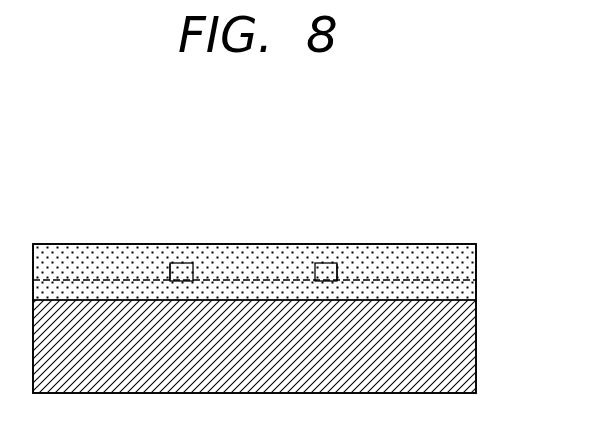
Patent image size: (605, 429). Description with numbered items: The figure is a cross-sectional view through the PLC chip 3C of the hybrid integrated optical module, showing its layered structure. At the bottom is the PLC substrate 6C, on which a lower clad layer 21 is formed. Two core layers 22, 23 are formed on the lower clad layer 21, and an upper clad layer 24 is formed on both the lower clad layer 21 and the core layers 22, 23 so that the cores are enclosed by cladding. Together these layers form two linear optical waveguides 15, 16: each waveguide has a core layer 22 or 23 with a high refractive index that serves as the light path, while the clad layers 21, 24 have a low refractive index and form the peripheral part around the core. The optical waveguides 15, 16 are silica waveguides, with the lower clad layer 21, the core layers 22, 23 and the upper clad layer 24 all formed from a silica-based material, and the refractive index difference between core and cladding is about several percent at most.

The PLC chip 3C is at (275, 214).
The PLC substrate 6C is at (470, 357).
The optical waveguide 15 is at (175, 260).
The optical waveguide 16 is at (331, 260).
The lower clad layer 21 is at (470, 288).
The core layer 22 is at (170, 267).
The core layer 23 is at (337, 270).
The upper clad layer 24 is at (468, 258).